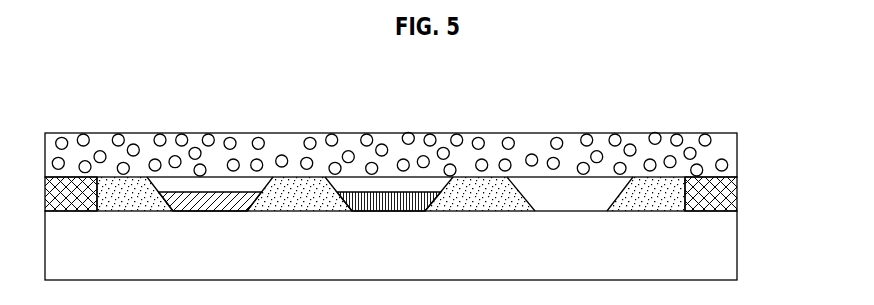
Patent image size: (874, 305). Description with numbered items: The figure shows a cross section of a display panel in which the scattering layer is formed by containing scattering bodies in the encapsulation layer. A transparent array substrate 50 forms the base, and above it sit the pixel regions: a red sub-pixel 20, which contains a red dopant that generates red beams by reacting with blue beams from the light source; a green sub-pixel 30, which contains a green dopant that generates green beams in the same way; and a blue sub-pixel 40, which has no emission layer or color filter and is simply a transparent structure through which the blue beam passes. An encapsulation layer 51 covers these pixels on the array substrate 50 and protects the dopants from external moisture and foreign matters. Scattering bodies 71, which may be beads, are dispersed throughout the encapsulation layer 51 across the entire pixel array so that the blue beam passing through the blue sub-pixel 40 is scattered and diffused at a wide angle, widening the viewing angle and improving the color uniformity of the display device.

The red sub-pixel 20 is at (210, 188).
The green sub-pixel 30 is at (390, 188).
The blue sub-pixel 40 is at (569, 188).
The array substrate 50 is at (723, 243).
The encapsulation layer 51 is at (722, 153).
The scattering bodies 71 is at (655, 143).